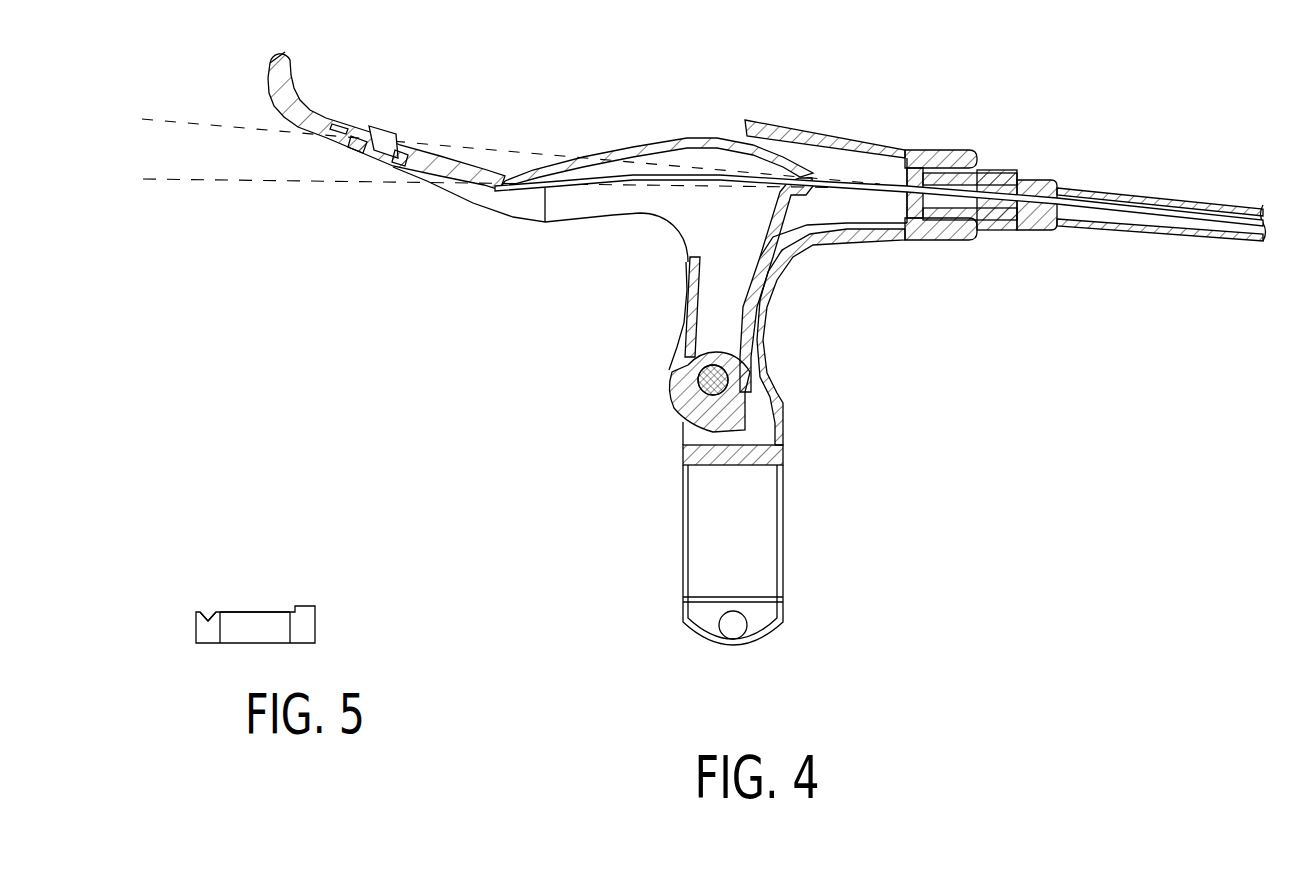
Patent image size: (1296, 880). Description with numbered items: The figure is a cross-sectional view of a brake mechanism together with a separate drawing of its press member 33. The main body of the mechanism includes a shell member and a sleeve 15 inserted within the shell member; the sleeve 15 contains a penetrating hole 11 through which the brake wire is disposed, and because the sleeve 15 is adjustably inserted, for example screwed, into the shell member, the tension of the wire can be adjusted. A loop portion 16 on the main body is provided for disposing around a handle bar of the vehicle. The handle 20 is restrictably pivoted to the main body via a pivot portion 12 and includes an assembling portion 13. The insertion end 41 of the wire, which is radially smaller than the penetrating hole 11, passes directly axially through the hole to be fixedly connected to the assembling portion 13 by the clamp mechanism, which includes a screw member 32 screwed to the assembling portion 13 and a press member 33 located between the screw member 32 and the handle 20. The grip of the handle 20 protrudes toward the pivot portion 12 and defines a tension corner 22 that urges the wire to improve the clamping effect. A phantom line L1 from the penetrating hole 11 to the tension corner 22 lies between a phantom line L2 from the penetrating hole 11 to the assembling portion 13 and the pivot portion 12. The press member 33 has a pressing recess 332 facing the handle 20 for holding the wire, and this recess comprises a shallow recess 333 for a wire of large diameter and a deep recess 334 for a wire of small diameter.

In FIG. 4, the penetrating hole 11 is at (963, 199).
In FIG. 4, the pivot portion 12 is at (703, 375).
In FIG. 4, the assembling portion 13 is at (357, 126).
In FIG. 4, the sleeve 15 is at (1003, 177).
In FIG. 4, the loop portion 16 is at (760, 612).
In FIG. 4, the handle 20 is at (447, 157).
In FIG. 4, the tension corner 22 is at (515, 178).
In FIG. 4, the screw member 32 is at (358, 150).
In FIG. 4, the press member 33 is at (343, 125).
In FIG. 4, the pressing recess 332 is at (410, 158).
In FIG. 5, the pressing recess 332 is at (408, 473).
In FIG. 5, the shallow recess 333 is at (259, 615).
In FIG. 5, the deep recess 334 is at (208, 618).
In FIG. 4, the insertion end 41 is at (652, 174).
In FIG. 4, the phantom line L1 is at (489, 179).
In FIG. 4, the phantom line L2 is at (489, 142).